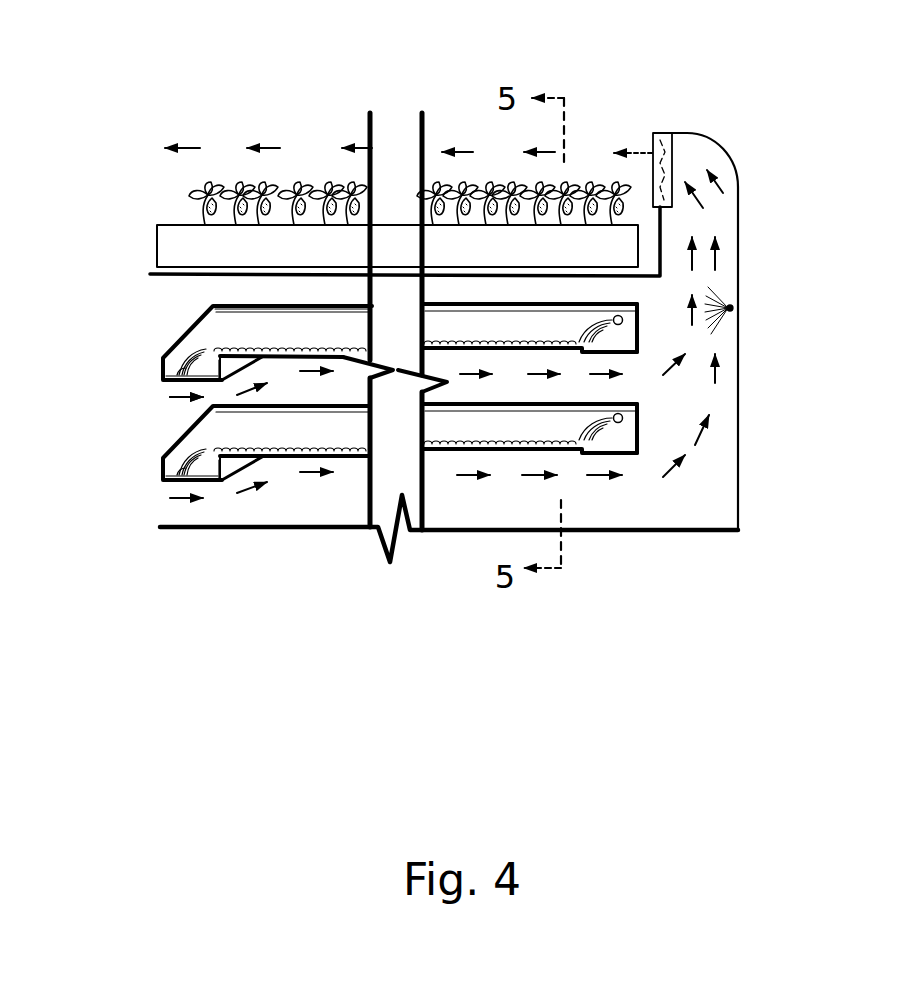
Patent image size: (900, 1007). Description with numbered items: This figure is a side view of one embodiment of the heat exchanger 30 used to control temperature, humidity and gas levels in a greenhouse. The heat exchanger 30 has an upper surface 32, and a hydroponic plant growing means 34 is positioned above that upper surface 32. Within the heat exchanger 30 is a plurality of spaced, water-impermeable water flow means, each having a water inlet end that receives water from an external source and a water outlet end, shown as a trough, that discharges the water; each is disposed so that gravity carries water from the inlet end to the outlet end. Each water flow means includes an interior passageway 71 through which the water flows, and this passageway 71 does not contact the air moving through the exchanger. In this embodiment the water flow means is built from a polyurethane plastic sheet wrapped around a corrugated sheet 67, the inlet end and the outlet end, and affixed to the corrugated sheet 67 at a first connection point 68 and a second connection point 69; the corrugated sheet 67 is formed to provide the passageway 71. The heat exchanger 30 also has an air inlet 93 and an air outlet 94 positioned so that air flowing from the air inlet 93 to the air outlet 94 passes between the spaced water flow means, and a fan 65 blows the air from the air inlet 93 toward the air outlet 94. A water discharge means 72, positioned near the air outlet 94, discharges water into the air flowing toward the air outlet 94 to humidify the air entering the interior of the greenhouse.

The heat exchanger 30 is at (142, 547).
The upper surface 32 is at (155, 273).
The hydroponic plant growing means 34 is at (173, 237).
The fan 65 is at (655, 133).
The corrugated sheet 67 is at (461, 352).
The first connection point 68 is at (582, 455).
The second connection point 69 is at (258, 458).
The interior passageway 71 is at (270, 332).
The water discharge means 72 is at (737, 310).
The air inlet 93 is at (182, 402).
The air outlet 94 is at (668, 133).